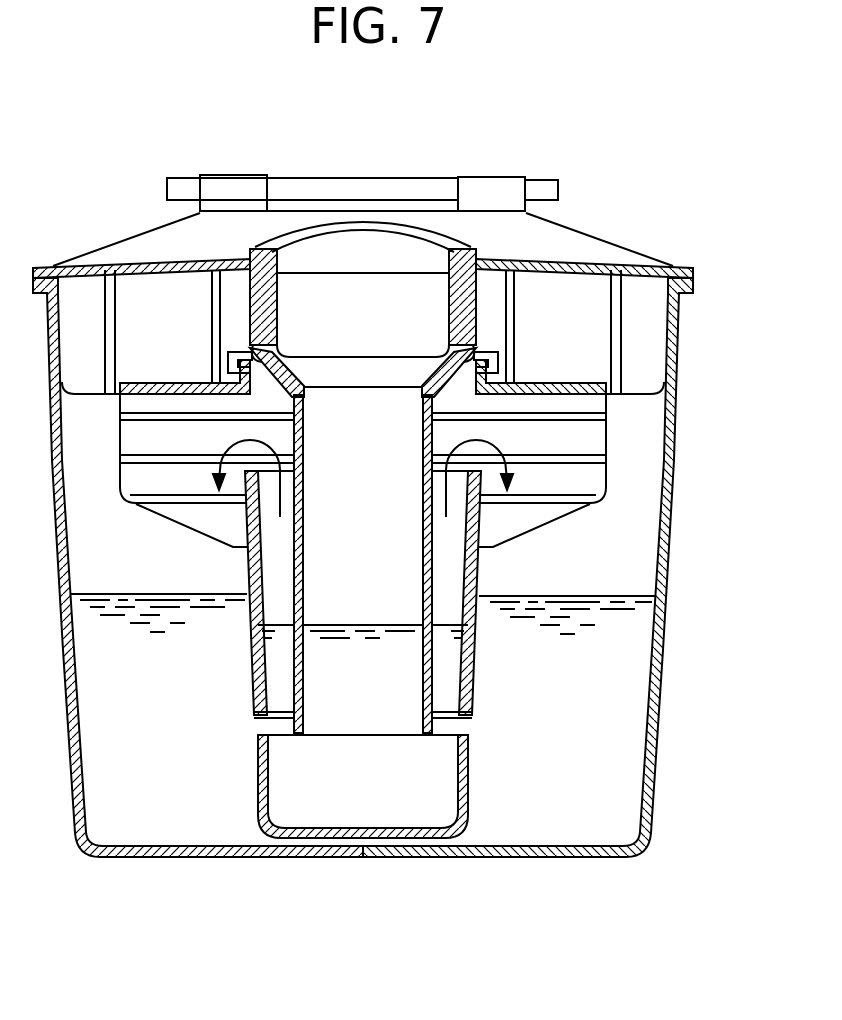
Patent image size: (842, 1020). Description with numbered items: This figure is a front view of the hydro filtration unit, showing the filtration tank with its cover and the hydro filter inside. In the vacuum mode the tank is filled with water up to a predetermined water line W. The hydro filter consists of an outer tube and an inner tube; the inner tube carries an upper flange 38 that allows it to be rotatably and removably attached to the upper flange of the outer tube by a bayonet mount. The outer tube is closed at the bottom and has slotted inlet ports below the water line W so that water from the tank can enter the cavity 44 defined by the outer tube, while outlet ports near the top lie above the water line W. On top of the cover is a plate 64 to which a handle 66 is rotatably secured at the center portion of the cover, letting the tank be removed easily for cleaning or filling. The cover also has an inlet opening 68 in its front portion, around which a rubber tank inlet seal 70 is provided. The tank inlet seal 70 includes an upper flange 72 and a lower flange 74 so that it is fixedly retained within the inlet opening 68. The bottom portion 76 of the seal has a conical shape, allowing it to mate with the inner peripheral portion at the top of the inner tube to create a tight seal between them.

The upper flange 38 is at (487, 357).
The cavity 44 is at (450, 683).
The plate 64 is at (490, 190).
The handle 66 is at (547, 187).
The inlet opening 68 is at (390, 252).
The tank inlet seal 70 is at (258, 332).
The upper flange 72 is at (250, 255).
The lower flange 74 is at (250, 348).
The bottom portion 76 is at (413, 375).
The water line W is at (103, 593).